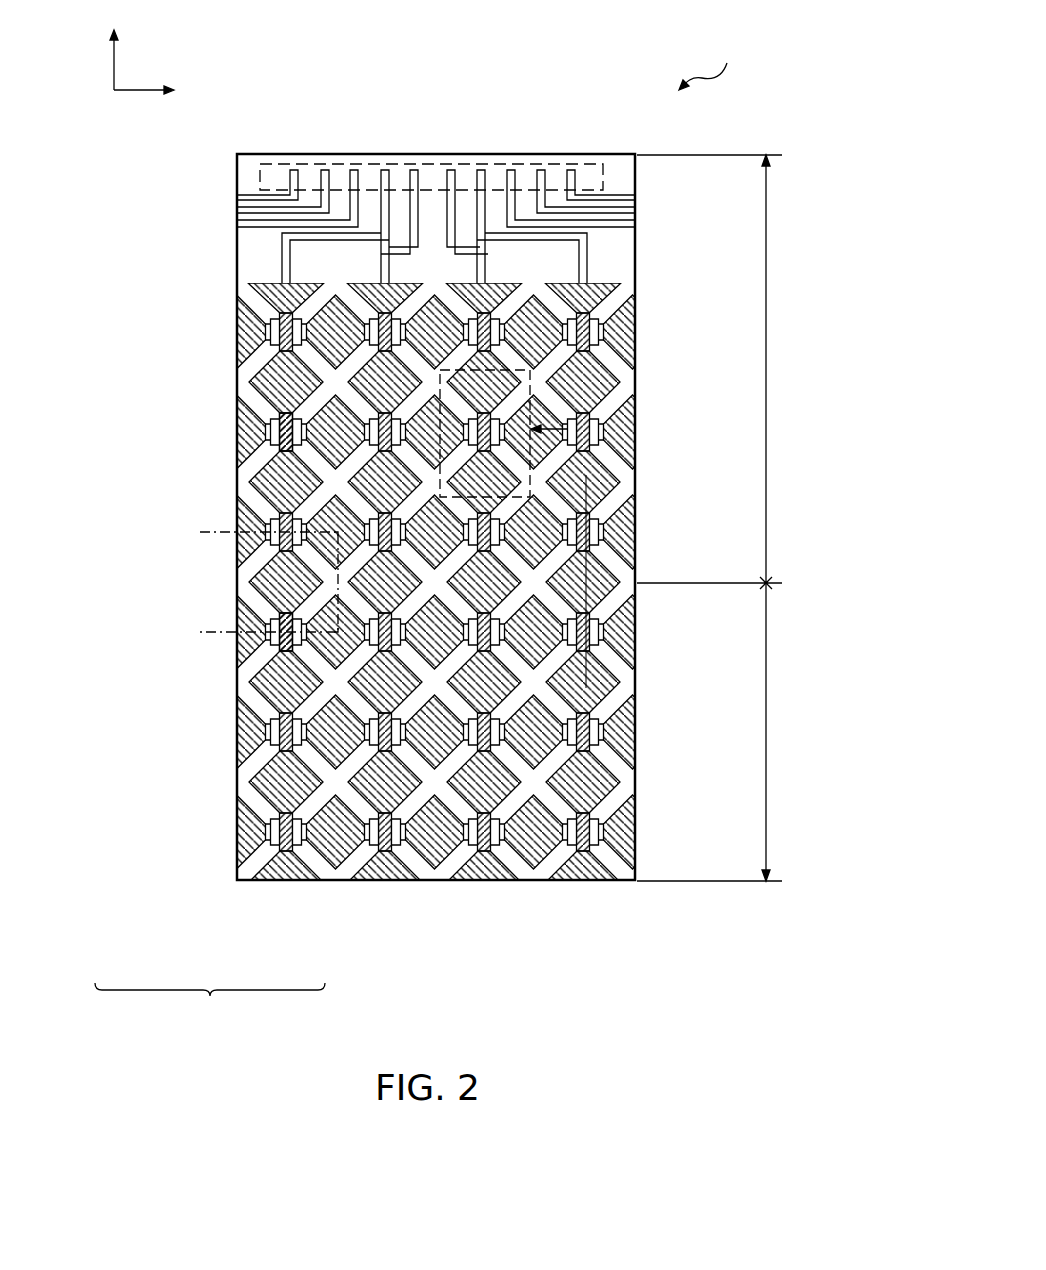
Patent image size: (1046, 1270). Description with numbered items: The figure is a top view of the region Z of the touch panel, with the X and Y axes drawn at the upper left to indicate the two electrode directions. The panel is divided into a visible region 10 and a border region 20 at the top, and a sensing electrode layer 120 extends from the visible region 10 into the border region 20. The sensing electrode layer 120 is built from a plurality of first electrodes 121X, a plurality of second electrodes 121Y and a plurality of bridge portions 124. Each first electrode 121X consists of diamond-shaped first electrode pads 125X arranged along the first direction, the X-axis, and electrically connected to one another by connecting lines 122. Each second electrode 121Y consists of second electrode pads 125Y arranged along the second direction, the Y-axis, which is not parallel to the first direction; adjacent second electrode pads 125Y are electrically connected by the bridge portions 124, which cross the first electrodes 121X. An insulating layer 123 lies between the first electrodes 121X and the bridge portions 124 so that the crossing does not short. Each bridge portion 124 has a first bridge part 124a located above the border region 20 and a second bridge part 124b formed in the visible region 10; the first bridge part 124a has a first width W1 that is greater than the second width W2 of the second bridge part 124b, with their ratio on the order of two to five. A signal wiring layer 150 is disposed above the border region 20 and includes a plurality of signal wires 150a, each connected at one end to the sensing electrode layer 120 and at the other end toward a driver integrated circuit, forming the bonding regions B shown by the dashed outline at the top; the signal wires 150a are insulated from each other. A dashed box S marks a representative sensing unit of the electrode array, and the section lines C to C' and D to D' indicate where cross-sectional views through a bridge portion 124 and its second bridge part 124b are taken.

The visible region 10 is at (770, 654).
The border region 20 is at (768, 370).
The sensing electrode layer 120 is at (210, 1008).
The first electrodes 121X is at (237, 847).
The second electrodes 121Y is at (273, 850).
The connecting lines 122 is at (388, 881).
The insulating layer 123 is at (322, 866).
The bridge portions 124 is at (102, 420).
The first bridge part 124a is at (274, 427).
The second bridge part 124b is at (274, 627).
The first electrode pads 125X is at (622, 830).
The second electrode pads 125Y is at (598, 779).
The signal wiring layer 150 is at (497, 93).
The signal wires 150a is at (410, 213).
The bonding regions B is at (280, 161).
The sensing unit region S is at (638, 414).
The first width W1 is at (284, 424).
The second width W2 is at (285, 632).
The section line C is at (628, 638).
The section line C' is at (631, 523).
The section line D is at (250, 600).
The section line D' is at (250, 564).
The X-axis X is at (154, 98).
The Y-axis Y is at (112, 45).
The region Z is at (710, 60).